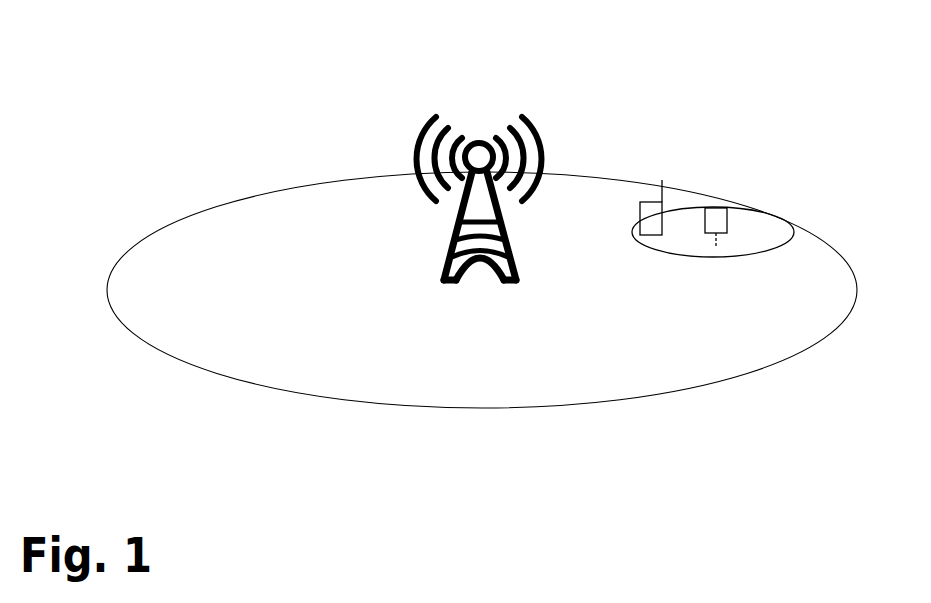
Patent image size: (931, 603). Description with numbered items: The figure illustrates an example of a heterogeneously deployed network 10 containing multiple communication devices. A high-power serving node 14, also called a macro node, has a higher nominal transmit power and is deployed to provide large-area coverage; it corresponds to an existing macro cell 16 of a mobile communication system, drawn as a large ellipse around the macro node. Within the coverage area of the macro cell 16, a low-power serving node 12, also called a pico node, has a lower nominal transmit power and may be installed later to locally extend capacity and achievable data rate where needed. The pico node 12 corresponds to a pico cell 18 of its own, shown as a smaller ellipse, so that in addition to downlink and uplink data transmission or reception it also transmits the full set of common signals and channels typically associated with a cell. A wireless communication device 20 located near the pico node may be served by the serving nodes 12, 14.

The heterogeneously deployed network 10 is at (137, 87).
The low-power serving node 12 is at (713, 208).
The high-power serving node 14 is at (450, 250).
The cell 16 is at (355, 390).
The cell 18 is at (753, 247).
The wireless communication device 20 is at (644, 220).